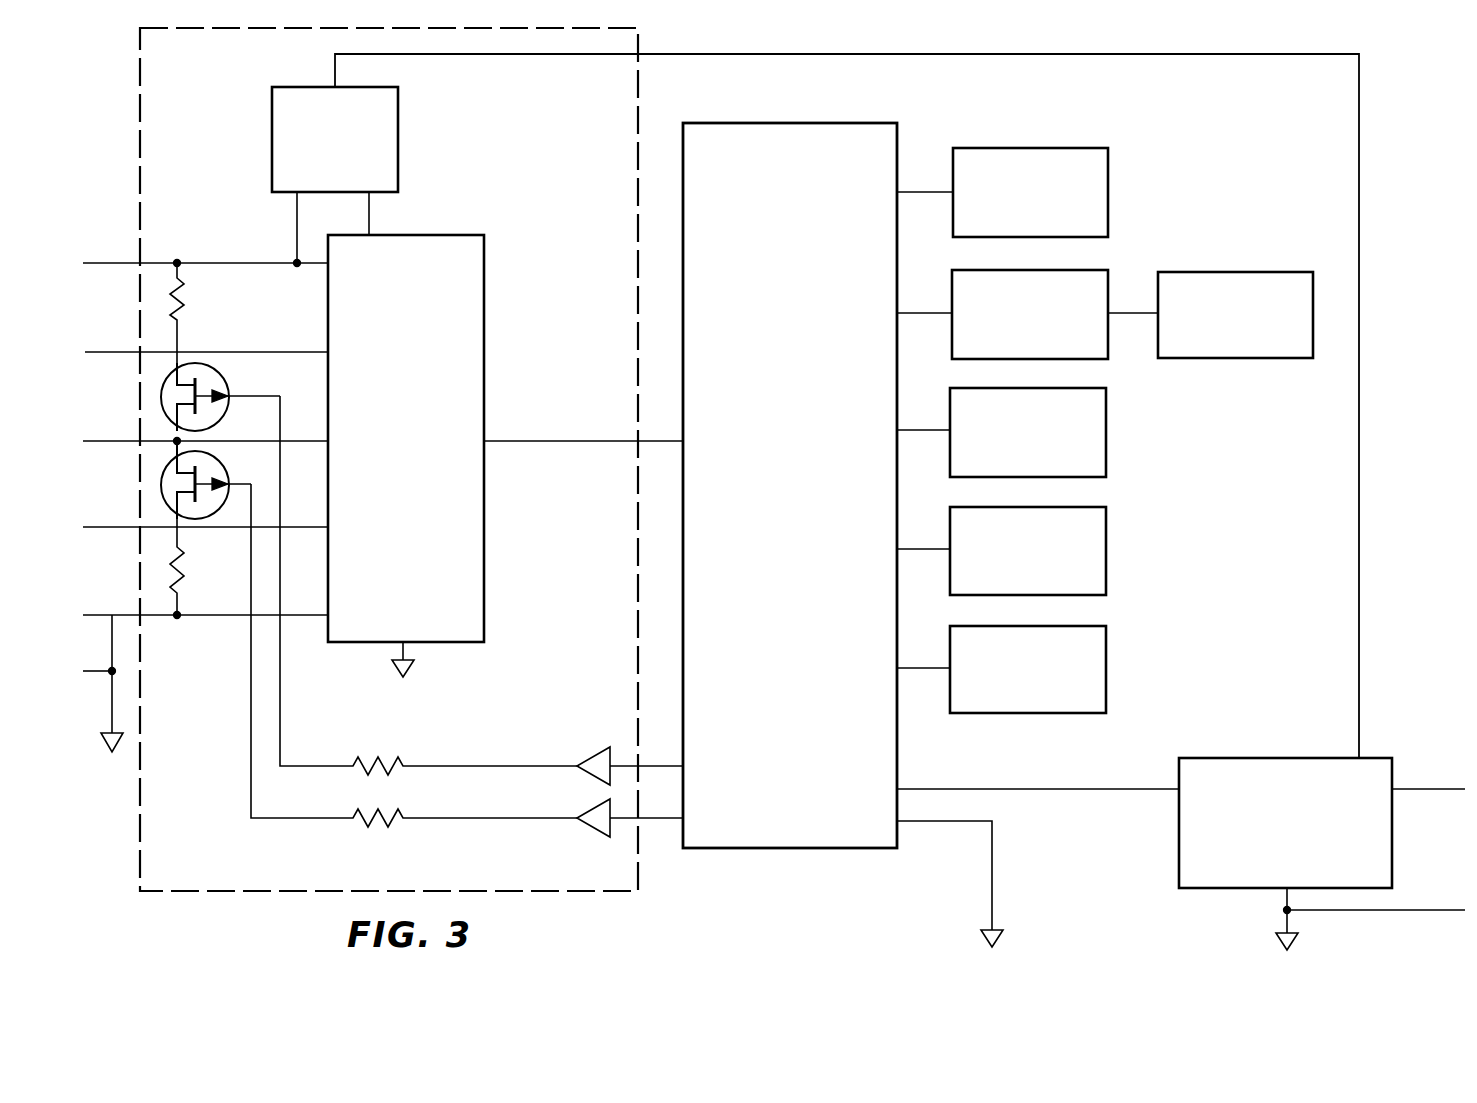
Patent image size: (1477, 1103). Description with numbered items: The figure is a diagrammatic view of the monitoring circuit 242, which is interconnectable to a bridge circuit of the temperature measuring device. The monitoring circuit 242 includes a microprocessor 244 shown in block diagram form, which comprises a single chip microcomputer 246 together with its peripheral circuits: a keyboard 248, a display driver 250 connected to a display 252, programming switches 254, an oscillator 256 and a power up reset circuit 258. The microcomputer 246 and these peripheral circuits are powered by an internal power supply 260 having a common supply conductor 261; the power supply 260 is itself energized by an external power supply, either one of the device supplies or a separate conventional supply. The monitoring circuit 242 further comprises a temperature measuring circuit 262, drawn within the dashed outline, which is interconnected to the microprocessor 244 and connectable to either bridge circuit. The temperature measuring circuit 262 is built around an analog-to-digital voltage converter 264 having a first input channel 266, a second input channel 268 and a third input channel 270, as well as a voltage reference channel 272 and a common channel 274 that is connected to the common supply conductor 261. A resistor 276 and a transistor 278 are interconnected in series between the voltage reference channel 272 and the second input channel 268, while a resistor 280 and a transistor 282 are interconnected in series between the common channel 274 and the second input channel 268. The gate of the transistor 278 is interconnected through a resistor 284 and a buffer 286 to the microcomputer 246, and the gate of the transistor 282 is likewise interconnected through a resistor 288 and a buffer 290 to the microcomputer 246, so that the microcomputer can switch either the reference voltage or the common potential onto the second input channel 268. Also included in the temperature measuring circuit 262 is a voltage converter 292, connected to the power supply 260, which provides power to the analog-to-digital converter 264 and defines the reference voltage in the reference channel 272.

The monitoring circuit 242 is at (1372, 627).
The microprocessor 244 is at (980, 128).
The single chip microcomputer 246 is at (807, 122).
The keyboard 248 is at (1108, 168).
The display driver 250 is at (1108, 278).
The display 252 is at (1260, 270).
The programming switches 254 is at (1106, 435).
The oscillator 256 is at (1106, 537).
The power up reset circuit 258 is at (1106, 668).
The internal power supply 260 is at (1272, 757).
The common supply conductor 261 is at (113, 718).
The temperature measuring circuit 262 is at (645, 876).
The analog-to-digital voltage converter 264 is at (470, 258).
The first input channel 266 is at (330, 352).
The second input channel 268 is at (330, 441).
The third input channel 270 is at (330, 527).
The voltage reference channel 272 is at (330, 263).
The common channel 274 is at (330, 615).
The resistor 276 is at (183, 290).
The transistor 278 is at (218, 370).
The resistor 280 is at (185, 568).
The transistor 282 is at (218, 462).
The resistor 284 is at (382, 760).
The buffer 286 is at (593, 760).
The resistor 288 is at (370, 824).
The buffer 290 is at (592, 826).
The voltage converter 292 is at (385, 150).